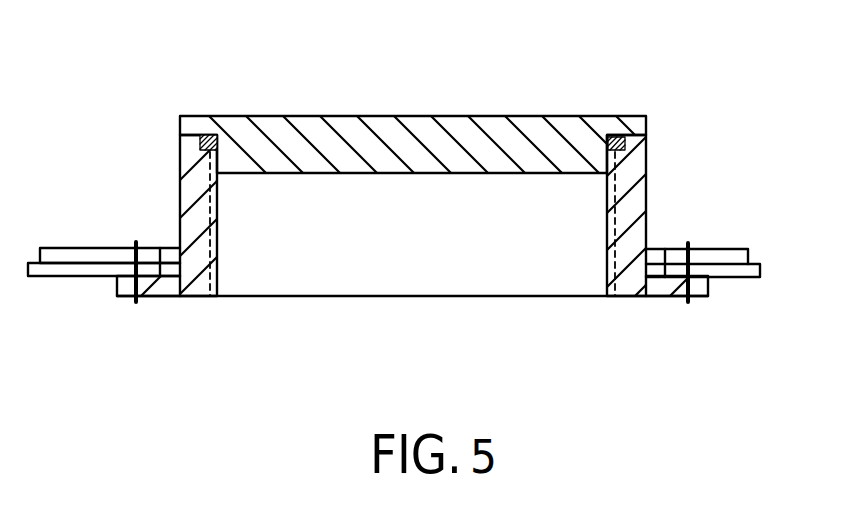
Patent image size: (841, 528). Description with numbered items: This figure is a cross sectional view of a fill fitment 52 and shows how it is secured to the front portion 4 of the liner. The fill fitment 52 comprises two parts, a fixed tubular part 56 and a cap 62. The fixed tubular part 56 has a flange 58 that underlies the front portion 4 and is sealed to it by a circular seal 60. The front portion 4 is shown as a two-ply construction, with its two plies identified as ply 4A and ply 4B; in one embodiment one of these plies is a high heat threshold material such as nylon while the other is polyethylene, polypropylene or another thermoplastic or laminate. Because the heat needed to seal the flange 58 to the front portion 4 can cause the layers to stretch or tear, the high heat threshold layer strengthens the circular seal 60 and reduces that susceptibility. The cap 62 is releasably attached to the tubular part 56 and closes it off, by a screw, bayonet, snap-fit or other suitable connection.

The front portion 4 is at (725, 240).
The ply 4A is at (72, 248).
The ply 4B is at (78, 277).
The fill fitment 52 is at (672, 148).
The fixed tubular part 56 is at (180, 177).
The flange 58 is at (173, 285).
The circular seal 60 is at (693, 255).
The cap 62 is at (504, 116).